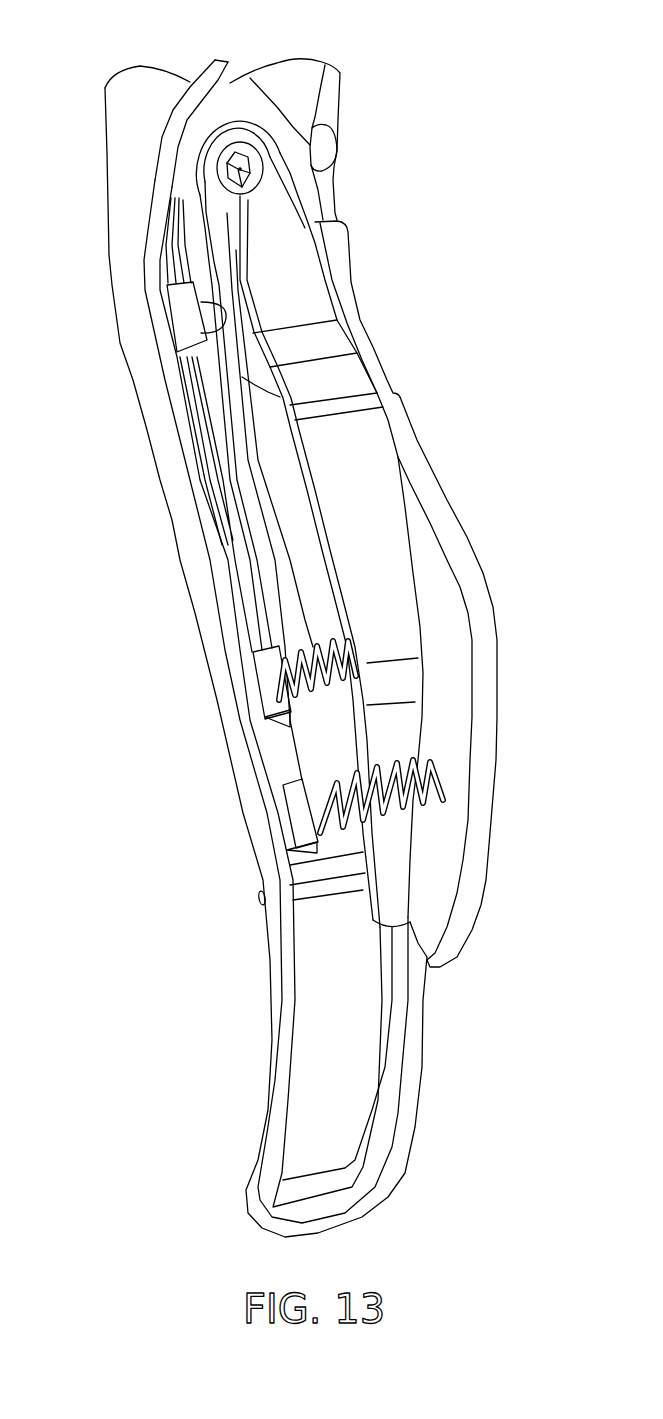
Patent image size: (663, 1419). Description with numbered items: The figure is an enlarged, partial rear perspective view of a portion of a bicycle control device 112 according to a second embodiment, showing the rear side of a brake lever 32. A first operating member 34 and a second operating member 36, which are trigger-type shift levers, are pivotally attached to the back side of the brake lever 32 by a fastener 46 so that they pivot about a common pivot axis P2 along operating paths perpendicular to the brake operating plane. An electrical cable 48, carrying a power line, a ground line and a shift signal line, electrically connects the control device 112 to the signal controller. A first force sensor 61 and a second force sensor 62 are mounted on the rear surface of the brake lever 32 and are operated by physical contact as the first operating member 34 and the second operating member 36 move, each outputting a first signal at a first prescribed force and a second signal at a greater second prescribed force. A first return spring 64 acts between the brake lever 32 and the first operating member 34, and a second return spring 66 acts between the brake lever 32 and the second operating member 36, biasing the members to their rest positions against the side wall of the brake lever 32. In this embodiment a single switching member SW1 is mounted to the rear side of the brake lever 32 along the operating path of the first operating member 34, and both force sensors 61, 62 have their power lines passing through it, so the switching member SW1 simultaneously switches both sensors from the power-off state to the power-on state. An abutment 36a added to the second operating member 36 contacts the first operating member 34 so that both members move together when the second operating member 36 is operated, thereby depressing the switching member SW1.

The bicycle control device 112 is at (400, 220).
The brake lever 32 is at (273, 1030).
The first operating member 34 is at (467, 530).
The second operating member 36 is at (275, 457).
The abutment 36a is at (355, 290).
The fastener 46 is at (227, 153).
The pivot axis P2 is at (240, 169).
The electrical cable 48 is at (208, 68).
The first switching member SW1 is at (178, 315).
The first force sensor 61 is at (277, 828).
The second force sensor 62 is at (258, 698).
The first return spring 64 is at (427, 810).
The second return spring 66 is at (315, 700).